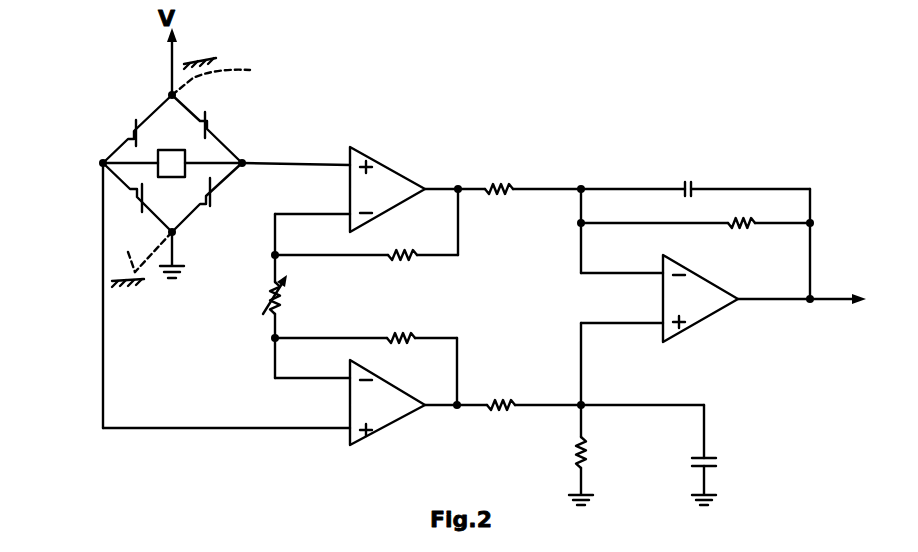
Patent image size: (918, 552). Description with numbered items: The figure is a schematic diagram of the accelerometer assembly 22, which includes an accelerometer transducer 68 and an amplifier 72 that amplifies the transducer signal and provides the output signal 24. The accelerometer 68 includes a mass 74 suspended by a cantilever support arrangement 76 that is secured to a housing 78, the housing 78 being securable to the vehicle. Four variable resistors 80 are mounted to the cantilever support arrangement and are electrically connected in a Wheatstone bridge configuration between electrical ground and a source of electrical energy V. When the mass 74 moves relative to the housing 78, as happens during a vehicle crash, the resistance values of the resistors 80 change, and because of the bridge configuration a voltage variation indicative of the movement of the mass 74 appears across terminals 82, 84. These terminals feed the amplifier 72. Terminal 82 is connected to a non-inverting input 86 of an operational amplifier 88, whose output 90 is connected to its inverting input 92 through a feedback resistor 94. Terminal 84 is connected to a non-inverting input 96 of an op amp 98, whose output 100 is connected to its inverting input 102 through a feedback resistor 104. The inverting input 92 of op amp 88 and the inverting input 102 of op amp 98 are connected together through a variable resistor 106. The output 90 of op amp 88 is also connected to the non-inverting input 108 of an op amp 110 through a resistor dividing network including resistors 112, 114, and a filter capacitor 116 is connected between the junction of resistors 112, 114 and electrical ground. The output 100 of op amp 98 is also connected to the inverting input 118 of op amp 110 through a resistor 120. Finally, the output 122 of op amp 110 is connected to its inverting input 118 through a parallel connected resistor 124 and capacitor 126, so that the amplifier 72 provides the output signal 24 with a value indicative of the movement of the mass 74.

The accelerometer assembly 22 is at (84, 362).
The output signal 24 is at (820, 298).
The accelerometer transducer 68 is at (306, 97).
The amplifier 72 is at (604, 136).
The mass 74 is at (172, 150).
The cantilever support arrangement 76 is at (199, 166).
The housing 78 is at (210, 52).
The variable resistors 80 is at (130, 132).
The terminal 82 is at (103, 163).
The terminal 84 is at (244, 162).
The non-inverting input 86 is at (350, 440).
The operational amplifier 88 is at (385, 403).
The output 90 is at (435, 407).
The inverting input 92 is at (350, 382).
The feedback resistor 94 is at (405, 335).
The non-inverting input 96 is at (350, 162).
The operational amplifier 98 is at (395, 185).
The output 100 is at (442, 189).
The inverting input 102 is at (350, 209).
The feedback resistor 104 is at (405, 259).
The variable resistor 106 is at (270, 294).
The non-inverting input 108 is at (662, 327).
The operational amplifier 110 is at (697, 298).
The resistor 112 is at (505, 398).
The resistor 114 is at (577, 451).
The filter capacitor 116 is at (712, 461).
The inverting input 118 is at (662, 272).
The resistor 120 is at (497, 192).
The output 122 is at (740, 302).
The resistor 124 is at (743, 227).
The capacitor 126 is at (686, 185).